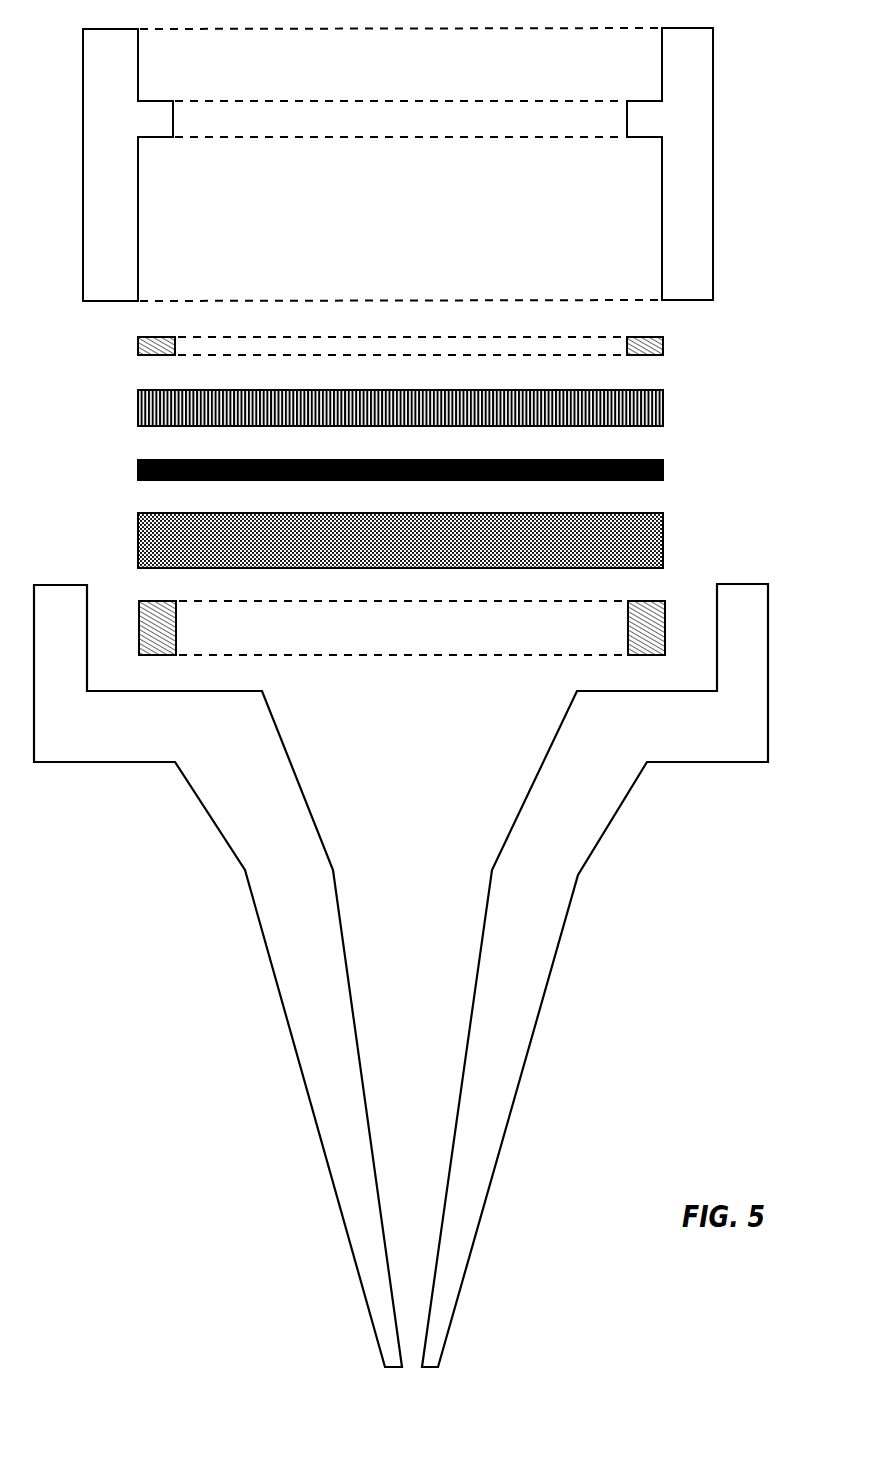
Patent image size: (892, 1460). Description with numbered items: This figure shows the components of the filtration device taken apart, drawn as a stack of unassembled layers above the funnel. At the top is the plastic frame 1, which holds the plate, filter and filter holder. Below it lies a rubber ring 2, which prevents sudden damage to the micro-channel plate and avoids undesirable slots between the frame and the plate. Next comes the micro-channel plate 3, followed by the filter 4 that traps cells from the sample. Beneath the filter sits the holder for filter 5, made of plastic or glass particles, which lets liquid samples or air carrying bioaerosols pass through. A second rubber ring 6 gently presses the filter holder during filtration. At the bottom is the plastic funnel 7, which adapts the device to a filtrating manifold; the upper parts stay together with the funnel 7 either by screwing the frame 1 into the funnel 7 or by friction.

The frame 1 is at (681, 118).
The rubber ring 2 is at (680, 336).
The micro-channel plate 3 is at (651, 407).
The filter 4 is at (664, 478).
The holder for filter 5 is at (630, 548).
The rubber ring 6 is at (650, 637).
The plastic funnel 7 is at (543, 887).